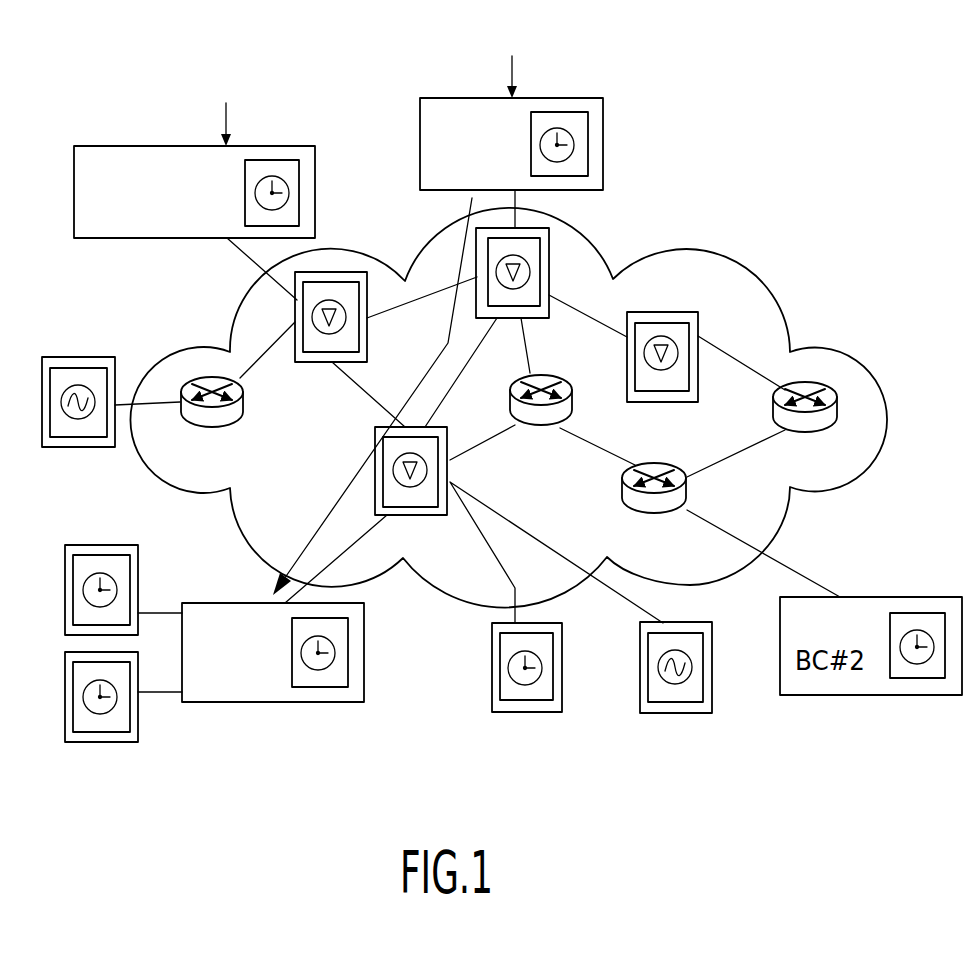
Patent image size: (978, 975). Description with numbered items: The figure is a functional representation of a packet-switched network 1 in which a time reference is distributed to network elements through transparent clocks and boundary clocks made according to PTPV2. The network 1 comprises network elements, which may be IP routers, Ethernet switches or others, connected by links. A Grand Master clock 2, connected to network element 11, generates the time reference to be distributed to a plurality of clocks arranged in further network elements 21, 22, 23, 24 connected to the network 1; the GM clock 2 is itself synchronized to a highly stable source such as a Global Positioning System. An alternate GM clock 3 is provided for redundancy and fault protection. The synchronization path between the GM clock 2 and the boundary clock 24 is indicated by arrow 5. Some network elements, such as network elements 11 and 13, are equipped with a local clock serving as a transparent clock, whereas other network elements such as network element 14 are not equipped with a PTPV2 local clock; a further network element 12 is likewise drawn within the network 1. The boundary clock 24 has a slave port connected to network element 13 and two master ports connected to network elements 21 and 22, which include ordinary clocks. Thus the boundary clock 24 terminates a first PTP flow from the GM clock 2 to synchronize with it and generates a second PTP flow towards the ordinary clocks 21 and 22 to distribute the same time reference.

The packet-switched network 1 is at (770, 297).
The Grand Master clock 2 is at (604, 135).
The alternate GM clock 3 is at (72, 197).
The arrow 5 is at (457, 257).
The network element 11 is at (547, 247).
The network node with transparent clock 12 is at (340, 268).
The network element 13 is at (433, 515).
The network element 14 is at (840, 397).
The network element 21 is at (65, 580).
The network element 22 is at (65, 700).
The network element 23 is at (540, 712).
The boundary clock 24 is at (285, 703).